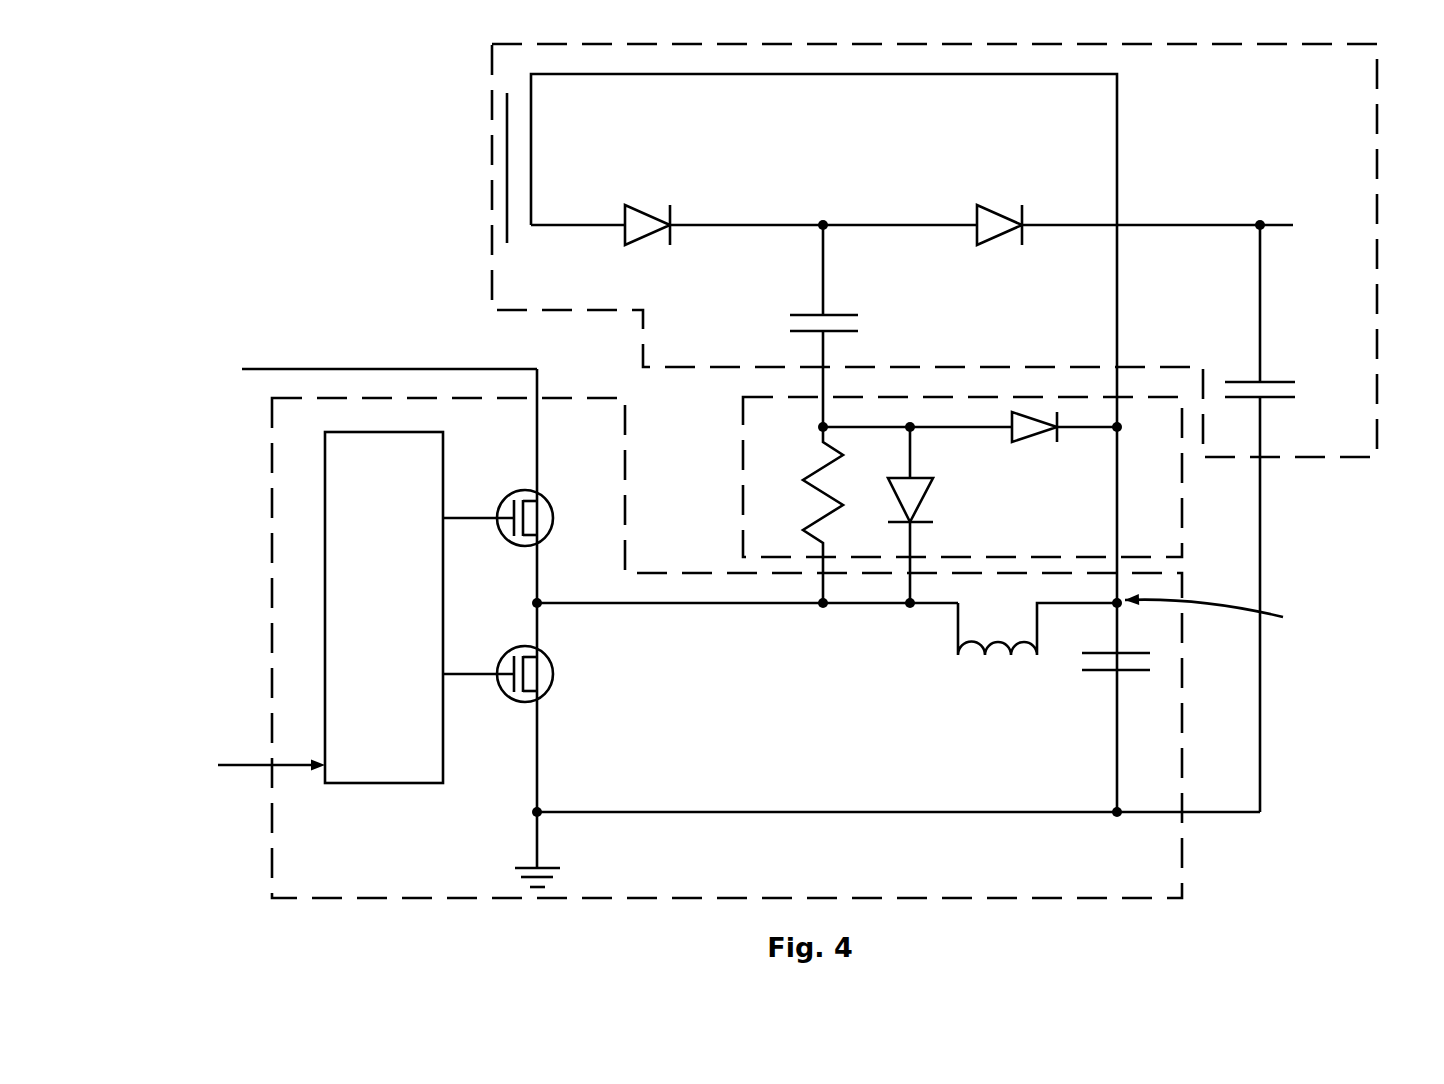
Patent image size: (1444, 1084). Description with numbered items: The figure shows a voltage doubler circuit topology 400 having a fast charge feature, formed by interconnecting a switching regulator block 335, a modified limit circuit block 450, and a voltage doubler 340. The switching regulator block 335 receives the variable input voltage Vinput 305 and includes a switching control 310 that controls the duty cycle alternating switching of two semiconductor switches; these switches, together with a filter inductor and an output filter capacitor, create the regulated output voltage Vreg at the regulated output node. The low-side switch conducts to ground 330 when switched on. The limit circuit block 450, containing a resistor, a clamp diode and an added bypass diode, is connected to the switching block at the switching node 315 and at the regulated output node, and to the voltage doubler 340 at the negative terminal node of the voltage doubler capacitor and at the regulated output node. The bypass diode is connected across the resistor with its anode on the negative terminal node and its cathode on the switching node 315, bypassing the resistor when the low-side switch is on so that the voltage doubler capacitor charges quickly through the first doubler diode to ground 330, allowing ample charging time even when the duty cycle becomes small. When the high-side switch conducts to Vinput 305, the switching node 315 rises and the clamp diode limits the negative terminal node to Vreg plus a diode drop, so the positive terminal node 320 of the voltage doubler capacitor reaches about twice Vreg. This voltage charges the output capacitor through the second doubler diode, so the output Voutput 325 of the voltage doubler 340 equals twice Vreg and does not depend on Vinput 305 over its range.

The voltage doubler circuit topology having a fast charge feature 400 is at (768, 472).
The variable input voltage Vinput 305 is at (262, 358).
The switching control 310 is at (360, 797).
The switching node N1 (switch point) 315 is at (550, 592).
The node N4 320 is at (845, 238).
The output voltage Voutput 325 is at (1267, 240).
The ground 330 is at (552, 840).
The switching regulator block 335 is at (725, 634).
The voltage doubler circuit block 340 is at (857, 428).
The limit circuit block 450 is at (1190, 495).